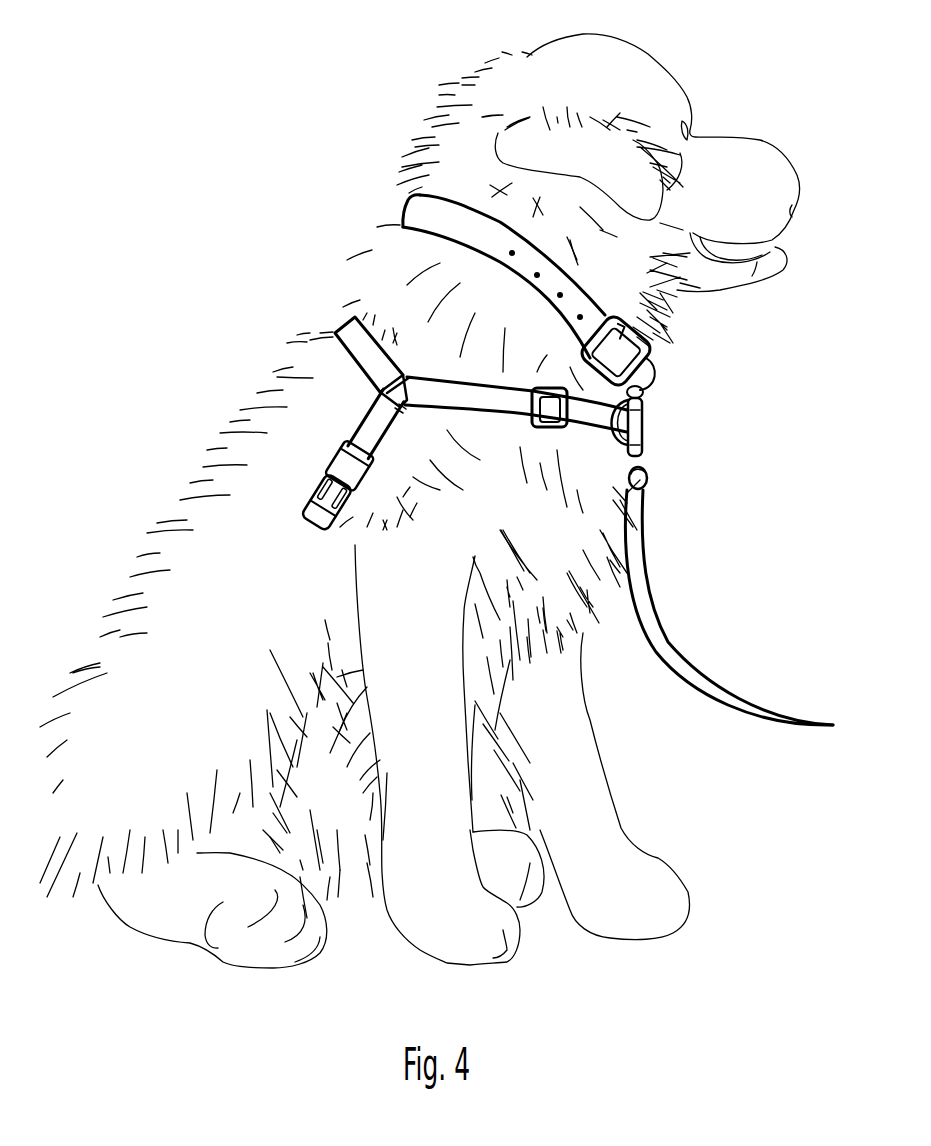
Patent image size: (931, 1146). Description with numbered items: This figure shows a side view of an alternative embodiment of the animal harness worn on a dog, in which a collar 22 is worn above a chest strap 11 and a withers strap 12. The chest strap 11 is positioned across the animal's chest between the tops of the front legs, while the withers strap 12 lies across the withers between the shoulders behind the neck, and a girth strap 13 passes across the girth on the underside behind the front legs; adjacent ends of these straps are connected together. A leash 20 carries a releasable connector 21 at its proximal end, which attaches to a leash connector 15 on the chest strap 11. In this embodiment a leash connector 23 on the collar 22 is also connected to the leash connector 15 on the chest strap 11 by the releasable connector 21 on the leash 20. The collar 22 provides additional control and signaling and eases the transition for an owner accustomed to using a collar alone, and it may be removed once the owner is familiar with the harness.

The chest strap 11 is at (508, 414).
The withers strap 12 is at (360, 360).
The girth strap 13 is at (362, 432).
The leash connector 15 is at (620, 440).
The leash 20 is at (653, 623).
The releasable connector 21 is at (640, 433).
The collar 22 is at (465, 208).
The leash connector 23 is at (655, 378).